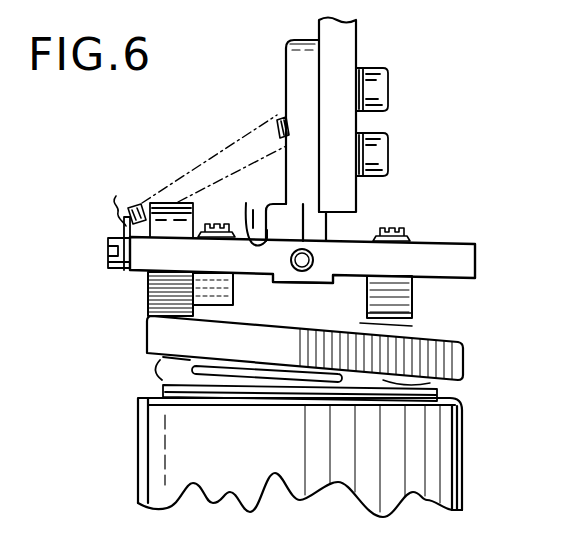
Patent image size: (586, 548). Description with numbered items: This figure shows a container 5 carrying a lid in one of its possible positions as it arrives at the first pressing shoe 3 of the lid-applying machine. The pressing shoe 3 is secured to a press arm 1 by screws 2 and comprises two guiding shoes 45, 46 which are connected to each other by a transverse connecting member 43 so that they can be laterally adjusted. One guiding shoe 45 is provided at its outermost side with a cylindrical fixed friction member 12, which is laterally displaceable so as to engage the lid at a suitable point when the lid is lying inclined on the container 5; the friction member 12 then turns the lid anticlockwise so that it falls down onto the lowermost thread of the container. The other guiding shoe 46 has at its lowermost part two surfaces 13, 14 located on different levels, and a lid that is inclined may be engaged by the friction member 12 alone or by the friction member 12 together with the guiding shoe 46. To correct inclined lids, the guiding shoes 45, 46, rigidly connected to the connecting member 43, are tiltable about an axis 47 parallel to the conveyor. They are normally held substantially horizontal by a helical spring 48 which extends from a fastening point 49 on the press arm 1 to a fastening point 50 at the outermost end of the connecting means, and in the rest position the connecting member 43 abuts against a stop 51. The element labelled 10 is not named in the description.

The press arm 1 is at (345, 46).
The screws 2 is at (389, 83).
The first pressing shoe 3 is at (366, 204).
The container 5 is at (447, 462).
The flange 10 is at (450, 366).
The friction member 12 is at (148, 300).
The surface 13 is at (398, 311).
The surface 14 is at (393, 324).
The transverse connecting member 43 is at (445, 249).
The guiding shoe 45 is at (233, 297).
The guiding shoe 46 is at (380, 293).
The axis 47 is at (306, 303).
The helical spring 48 is at (232, 149).
The fastening point 49 is at (285, 117).
The fastening point 50 is at (118, 206).
The stop 51 is at (246, 216).